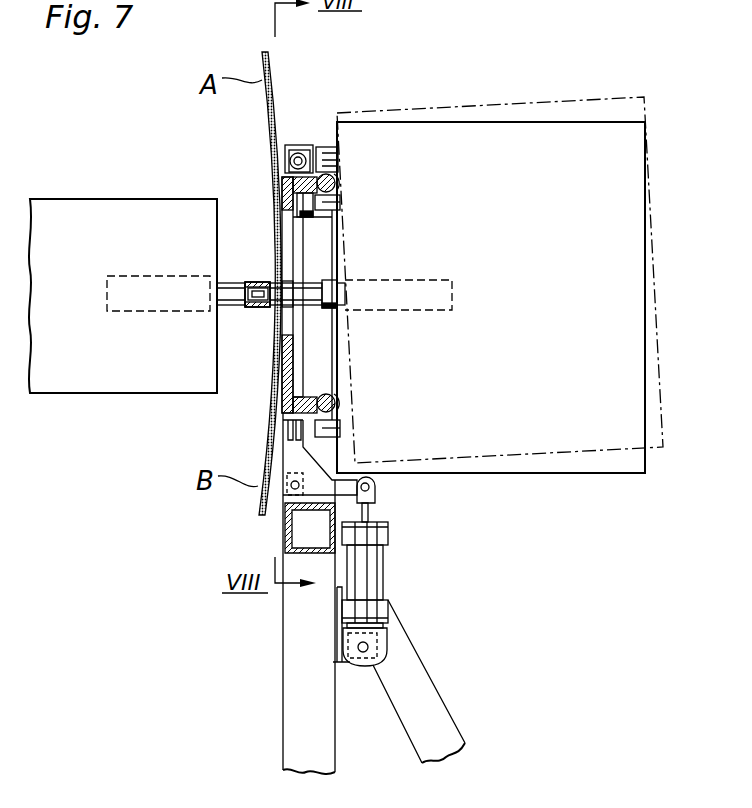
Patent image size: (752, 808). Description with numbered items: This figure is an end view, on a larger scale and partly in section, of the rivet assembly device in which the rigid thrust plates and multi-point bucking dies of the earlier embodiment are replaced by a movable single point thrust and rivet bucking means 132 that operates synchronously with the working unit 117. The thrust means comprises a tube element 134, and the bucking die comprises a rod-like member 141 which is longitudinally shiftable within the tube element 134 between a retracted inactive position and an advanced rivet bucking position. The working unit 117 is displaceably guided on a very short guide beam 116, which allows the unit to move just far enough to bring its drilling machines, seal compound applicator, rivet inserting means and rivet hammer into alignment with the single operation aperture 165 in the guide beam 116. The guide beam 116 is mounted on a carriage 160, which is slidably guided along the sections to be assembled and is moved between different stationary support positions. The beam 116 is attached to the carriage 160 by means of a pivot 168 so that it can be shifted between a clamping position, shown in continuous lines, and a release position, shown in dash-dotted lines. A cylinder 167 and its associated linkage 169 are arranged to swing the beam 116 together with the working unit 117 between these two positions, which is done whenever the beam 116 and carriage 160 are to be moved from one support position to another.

The guide beam 116 is at (284, 187).
The working unit 117 is at (490, 250).
The thrust and rivet bucking means 132 is at (112, 250).
The tube element 134 is at (254, 279).
The rod-like member 141 is at (252, 311).
The carriage 160 is at (412, 663).
The operation aperture 165 is at (293, 238).
The cylinder 167 is at (370, 575).
The pivot 168 is at (297, 150).
The linkage 169 is at (318, 428).